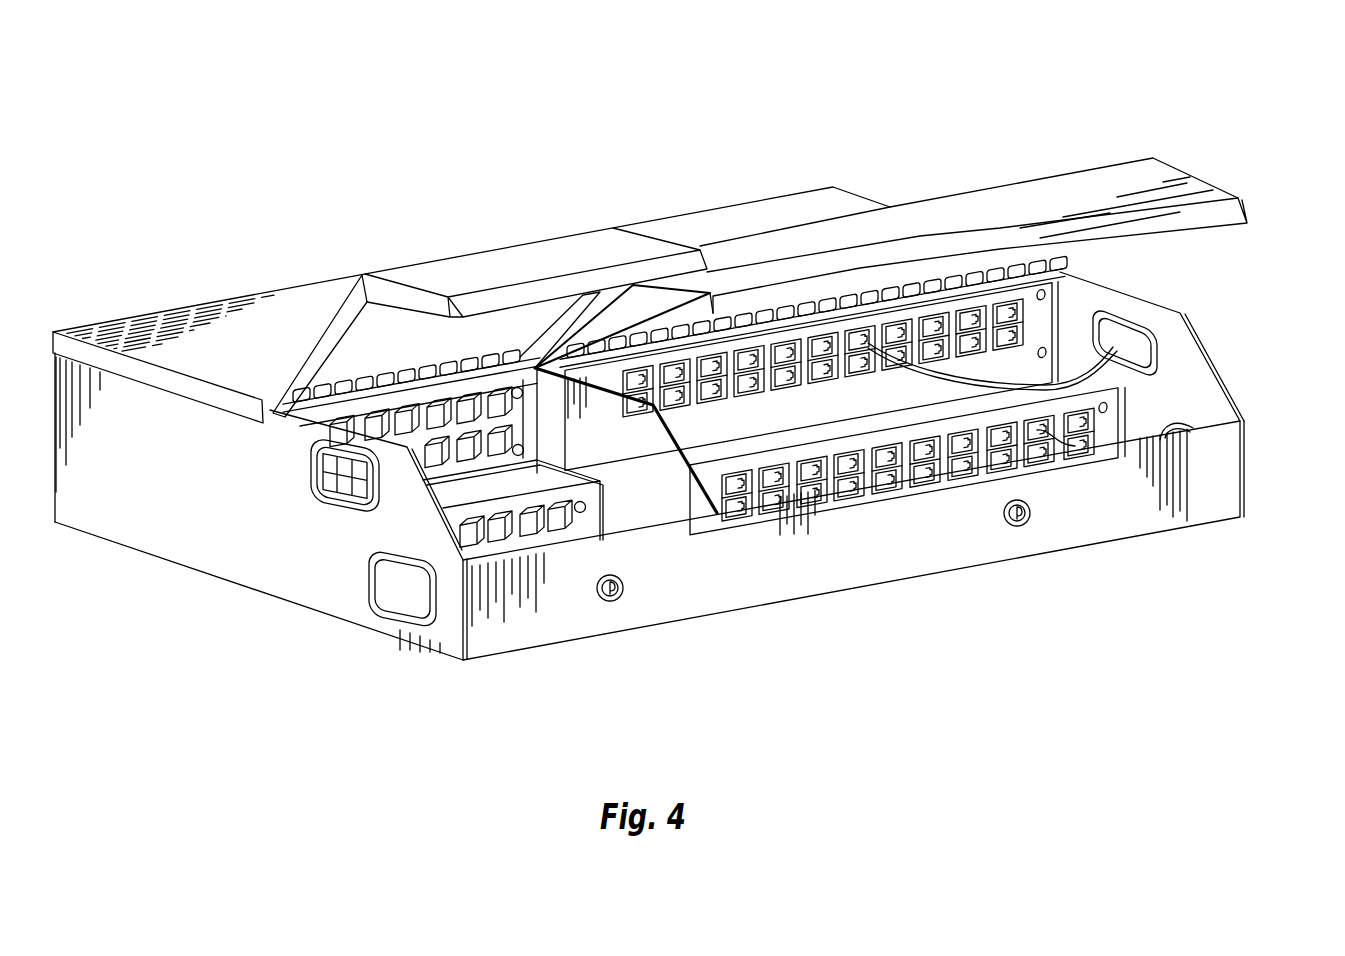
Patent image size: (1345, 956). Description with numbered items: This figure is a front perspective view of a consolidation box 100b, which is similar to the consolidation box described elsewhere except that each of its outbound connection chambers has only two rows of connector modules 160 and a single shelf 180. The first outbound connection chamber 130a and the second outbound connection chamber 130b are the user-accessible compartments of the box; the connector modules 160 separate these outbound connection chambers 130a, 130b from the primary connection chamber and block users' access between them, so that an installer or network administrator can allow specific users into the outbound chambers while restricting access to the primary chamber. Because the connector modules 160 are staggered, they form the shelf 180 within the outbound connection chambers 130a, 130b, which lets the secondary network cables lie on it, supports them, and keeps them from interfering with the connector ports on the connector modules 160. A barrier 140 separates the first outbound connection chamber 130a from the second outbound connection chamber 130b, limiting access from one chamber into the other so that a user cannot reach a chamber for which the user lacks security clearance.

The consolidation box 100b is at (358, 122).
The first outbound connection chamber 130a is at (1203, 408).
The second outbound connection chamber 130b is at (580, 540).
The barrier 140 is at (682, 497).
The connector module 160 is at (1042, 322).
The shelf 180 is at (1097, 383).